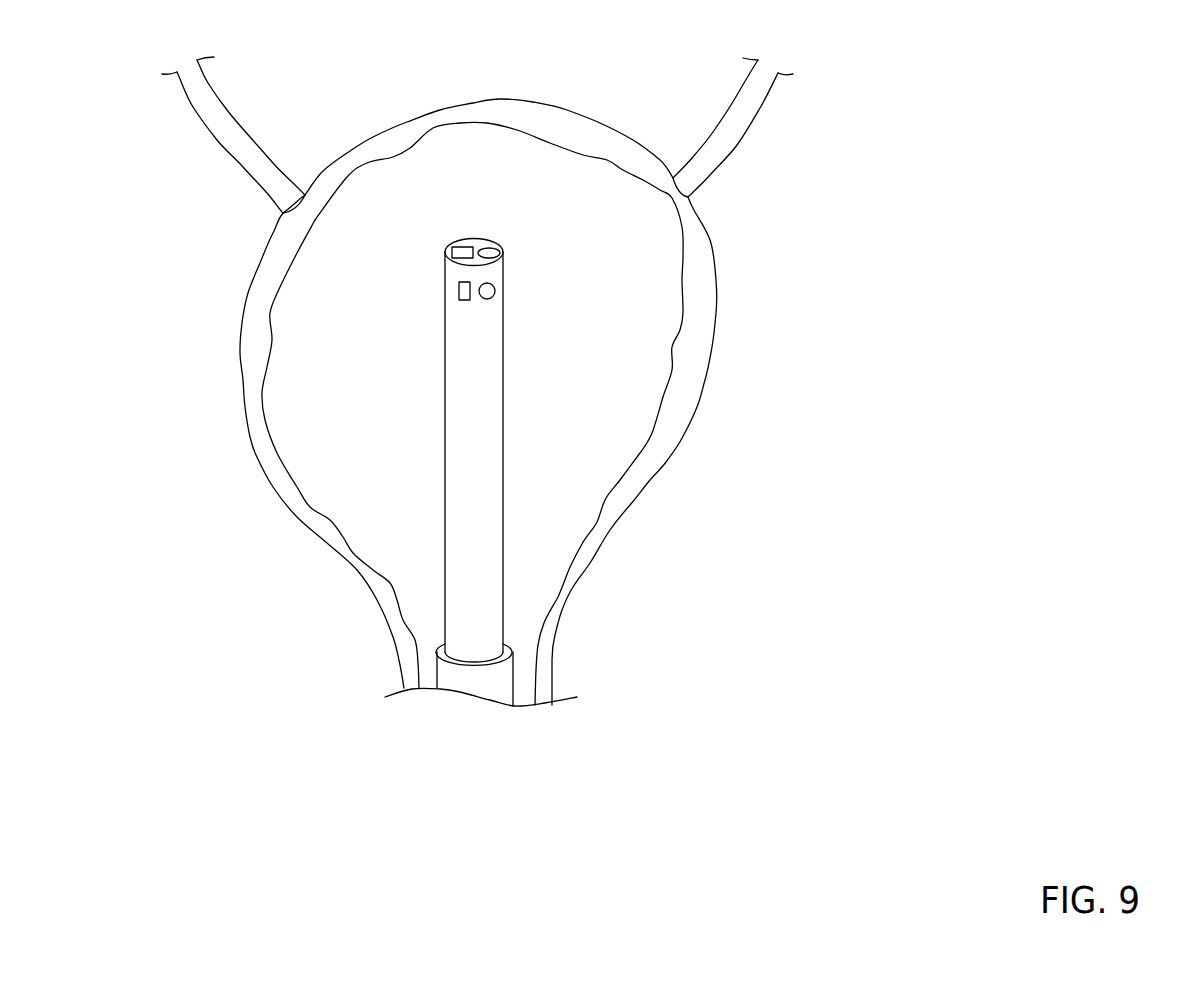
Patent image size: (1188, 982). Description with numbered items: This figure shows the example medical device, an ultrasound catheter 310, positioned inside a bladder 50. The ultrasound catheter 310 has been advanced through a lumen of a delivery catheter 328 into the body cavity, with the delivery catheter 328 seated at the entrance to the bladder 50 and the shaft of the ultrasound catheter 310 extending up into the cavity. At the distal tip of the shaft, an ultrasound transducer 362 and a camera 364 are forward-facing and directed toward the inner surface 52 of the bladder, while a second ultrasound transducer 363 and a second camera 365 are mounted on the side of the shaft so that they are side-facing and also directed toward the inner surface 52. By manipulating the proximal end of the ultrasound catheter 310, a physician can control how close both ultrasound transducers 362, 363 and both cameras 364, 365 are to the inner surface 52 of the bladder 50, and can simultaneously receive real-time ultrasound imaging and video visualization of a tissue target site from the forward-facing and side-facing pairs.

The bladder 50 is at (790, 275).
The inner surface of the bladder 52 is at (650, 433).
The ultrasound catheter 310 is at (548, 342).
The delivery catheter 328 is at (497, 679).
The ultrasound transducer 362 is at (460, 246).
The ultrasound transducer 363 is at (459, 290).
The camera 364 is at (488, 248).
The camera 365 is at (495, 289).